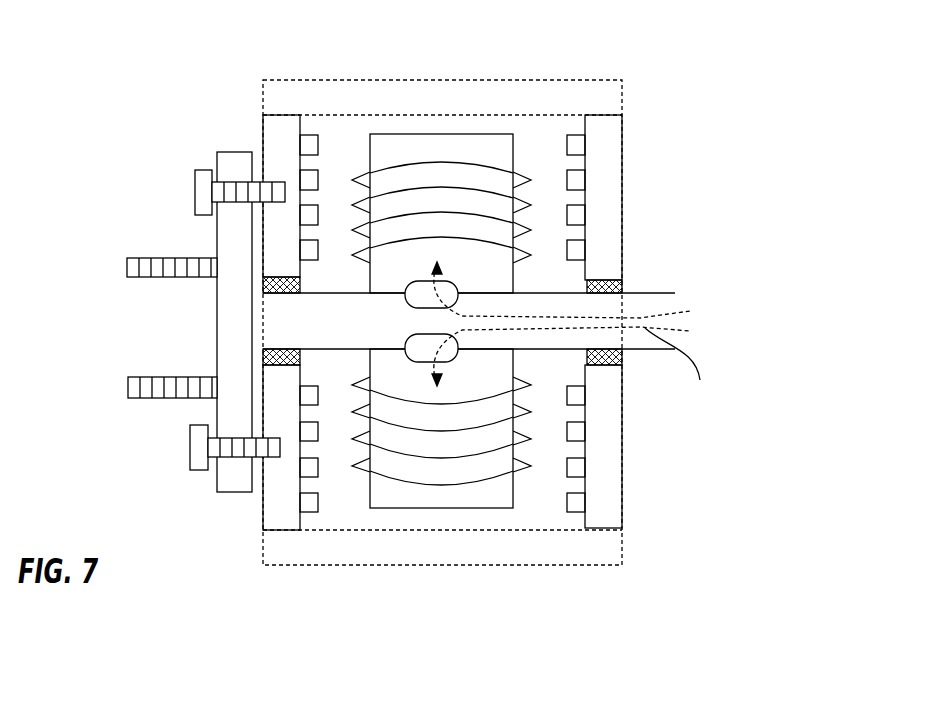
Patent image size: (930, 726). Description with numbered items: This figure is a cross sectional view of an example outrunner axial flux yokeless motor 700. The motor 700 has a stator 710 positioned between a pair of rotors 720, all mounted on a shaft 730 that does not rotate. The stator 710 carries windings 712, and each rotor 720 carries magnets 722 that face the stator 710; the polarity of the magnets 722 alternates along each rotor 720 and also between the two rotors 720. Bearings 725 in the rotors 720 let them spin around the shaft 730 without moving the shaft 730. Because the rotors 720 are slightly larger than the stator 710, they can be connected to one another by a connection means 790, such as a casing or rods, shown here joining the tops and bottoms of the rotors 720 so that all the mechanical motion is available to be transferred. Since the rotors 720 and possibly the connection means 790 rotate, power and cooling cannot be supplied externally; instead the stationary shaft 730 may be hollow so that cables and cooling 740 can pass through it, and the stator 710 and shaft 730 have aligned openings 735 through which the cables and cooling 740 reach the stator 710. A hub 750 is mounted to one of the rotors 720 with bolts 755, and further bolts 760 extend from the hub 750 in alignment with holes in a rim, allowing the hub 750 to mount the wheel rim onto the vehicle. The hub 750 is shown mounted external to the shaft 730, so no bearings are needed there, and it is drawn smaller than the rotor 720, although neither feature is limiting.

The outrunner axial flux yokeless motor 700 is at (712, 150).
The stator 710 is at (443, 508).
The windings 712 is at (357, 466).
The rotors 720 is at (607, 209).
The magnets 722 is at (304, 135).
The bearings 725 is at (622, 284).
The shaft 730 is at (675, 293).
The openings 735 is at (430, 308).
The cables and cooling 740 is at (692, 364).
The hub 750 is at (228, 152).
The bolts 755 is at (195, 200).
The bolts 760 is at (127, 269).
The connection means 790 is at (438, 98).